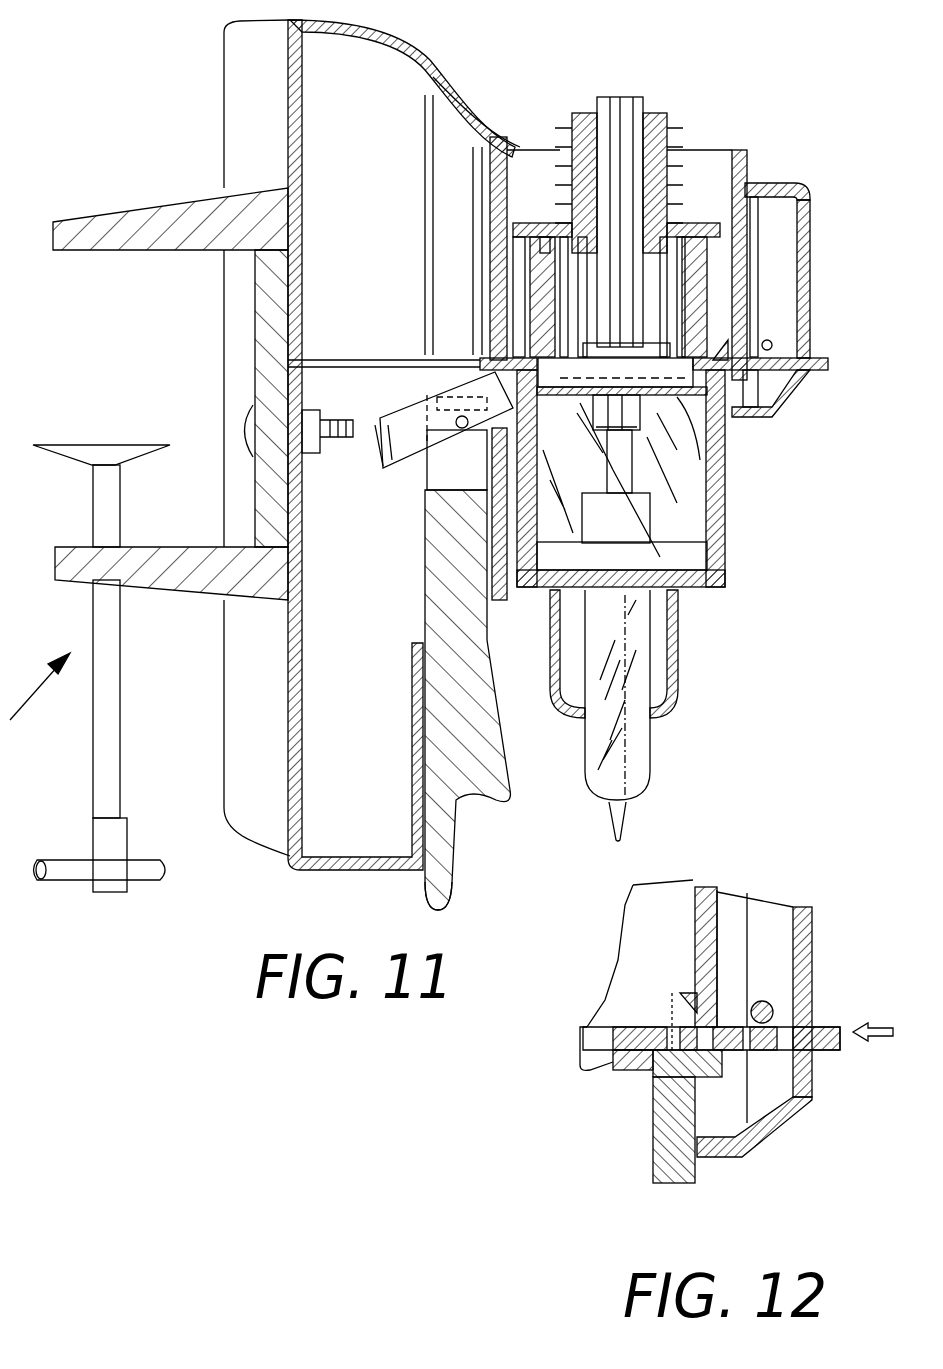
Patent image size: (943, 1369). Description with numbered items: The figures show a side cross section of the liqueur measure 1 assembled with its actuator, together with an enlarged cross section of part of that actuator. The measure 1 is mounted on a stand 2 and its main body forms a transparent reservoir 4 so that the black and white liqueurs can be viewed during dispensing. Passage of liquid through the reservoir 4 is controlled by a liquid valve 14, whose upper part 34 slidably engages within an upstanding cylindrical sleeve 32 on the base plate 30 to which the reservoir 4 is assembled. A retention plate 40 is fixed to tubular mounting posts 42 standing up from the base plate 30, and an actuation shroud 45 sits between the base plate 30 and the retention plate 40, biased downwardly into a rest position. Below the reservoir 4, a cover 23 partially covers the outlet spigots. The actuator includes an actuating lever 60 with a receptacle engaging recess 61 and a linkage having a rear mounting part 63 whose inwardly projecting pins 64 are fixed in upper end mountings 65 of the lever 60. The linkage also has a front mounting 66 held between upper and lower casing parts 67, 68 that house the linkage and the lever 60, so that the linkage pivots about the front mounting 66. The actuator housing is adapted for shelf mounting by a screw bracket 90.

In FIG. 11, the measure 1 is at (742, 545).
In FIG. 12, the measure 1 is at (702, 1180).
In FIG. 11, the stand 2 is at (195, 840).
In FIG. 11, the reservoir 4 is at (720, 492).
In FIG. 11, the liquid valve 14 is at (625, 130).
In FIG. 11, the cover 23 is at (680, 632).
In FIG. 11, the base plate 30 is at (715, 462).
In FIG. 11, the cylindrical sleeve 32 is at (672, 145).
In FIG. 11, the upper part of liquid valve member 34 is at (650, 125).
In FIG. 11, the retention plate 40 is at (692, 215).
In FIG. 11, the tubular mounting post 42 is at (540, 285).
In FIG. 11, the actuation shroud 45 is at (800, 205).
In FIG. 11, the actuating lever 60 is at (487, 728).
In FIG. 11, the receptacle engaging recess 61 is at (468, 808).
In FIG. 11, the rear mounting part 63 is at (402, 470).
In FIG. 11, the inwardly projecting pin 64 is at (455, 428).
In FIG. 11, the upper end mounting 65 is at (432, 410).
In FIG. 11, the front mounting 66 is at (772, 343).
In FIG. 12, the front mounting 66 is at (767, 1001).
In FIG. 11, the upper casing part 67 is at (805, 258).
In FIG. 12, the upper casing part 67 is at (812, 916).
In FIG. 11, the lower casing part 68 is at (790, 420).
In FIG. 12, the lower casing part 68 is at (770, 1140).
In FIG. 11, the screw bracket 90 is at (40, 709).